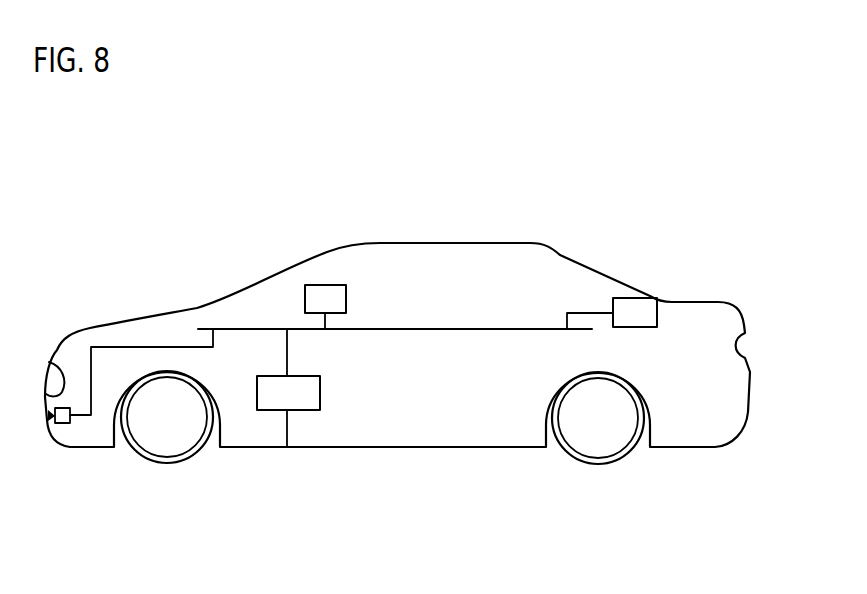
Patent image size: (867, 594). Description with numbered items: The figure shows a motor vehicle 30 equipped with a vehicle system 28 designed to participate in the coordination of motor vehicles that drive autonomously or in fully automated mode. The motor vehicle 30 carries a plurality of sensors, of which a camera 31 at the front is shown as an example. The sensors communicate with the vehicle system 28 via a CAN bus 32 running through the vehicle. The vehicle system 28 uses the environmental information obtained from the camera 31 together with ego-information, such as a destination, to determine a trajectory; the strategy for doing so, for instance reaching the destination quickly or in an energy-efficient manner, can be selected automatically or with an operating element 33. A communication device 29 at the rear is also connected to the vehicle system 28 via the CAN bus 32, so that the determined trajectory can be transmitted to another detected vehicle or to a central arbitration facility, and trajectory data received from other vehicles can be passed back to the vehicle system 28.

The vehicle system 28 is at (287, 447).
The communication device 29 is at (633, 298).
The motor vehicle 30 is at (488, 218).
The camera 31 is at (62, 423).
The CAN bus 32 is at (242, 328).
The operating element 33 is at (326, 283).